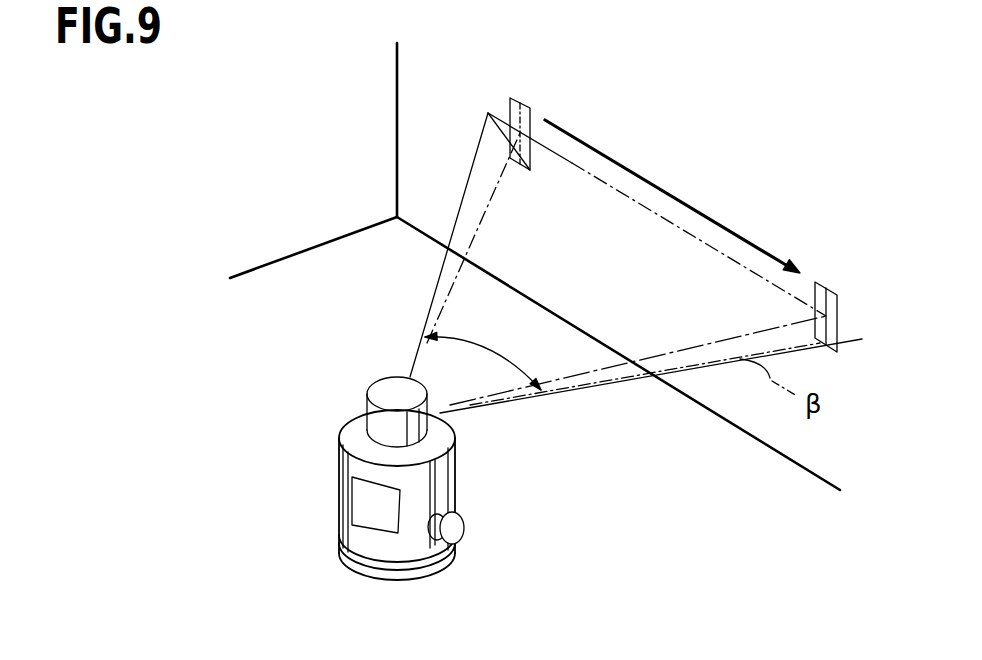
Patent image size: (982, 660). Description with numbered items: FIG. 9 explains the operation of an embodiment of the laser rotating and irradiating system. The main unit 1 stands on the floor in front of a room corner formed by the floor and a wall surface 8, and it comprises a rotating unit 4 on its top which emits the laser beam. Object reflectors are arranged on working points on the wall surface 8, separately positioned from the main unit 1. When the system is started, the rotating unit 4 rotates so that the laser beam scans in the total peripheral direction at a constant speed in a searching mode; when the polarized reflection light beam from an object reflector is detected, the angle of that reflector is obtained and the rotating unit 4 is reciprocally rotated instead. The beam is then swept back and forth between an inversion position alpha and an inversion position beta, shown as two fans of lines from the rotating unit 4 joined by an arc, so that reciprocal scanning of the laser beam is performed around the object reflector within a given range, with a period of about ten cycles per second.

The main unit 1 is at (404, 465).
The rotating unit 4 is at (376, 418).
The wall surface 8 is at (447, 77).